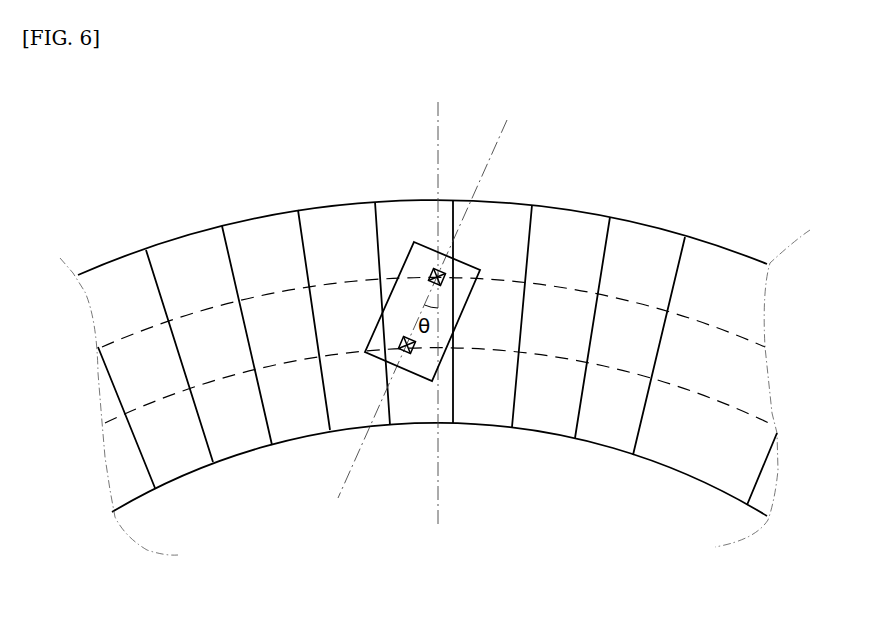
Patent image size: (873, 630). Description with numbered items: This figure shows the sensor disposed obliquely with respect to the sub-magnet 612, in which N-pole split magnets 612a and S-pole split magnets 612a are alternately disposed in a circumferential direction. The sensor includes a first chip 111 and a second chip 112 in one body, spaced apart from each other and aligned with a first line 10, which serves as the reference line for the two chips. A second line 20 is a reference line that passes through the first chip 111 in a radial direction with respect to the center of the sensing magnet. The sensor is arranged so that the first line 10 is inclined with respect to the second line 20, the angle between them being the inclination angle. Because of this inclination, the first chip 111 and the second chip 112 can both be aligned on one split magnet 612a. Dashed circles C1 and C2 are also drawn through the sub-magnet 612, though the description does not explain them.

The first line 10 is at (503, 127).
The second line 20 is at (440, 104).
The first chip 111 is at (430, 276).
The second chip 112 is at (415, 350).
The sub-magnet 612 is at (712, 238).
The split magnet 612a is at (725, 270).
The first virtual circle C1 is at (194, 313).
The second virtual circle C2 is at (225, 375).